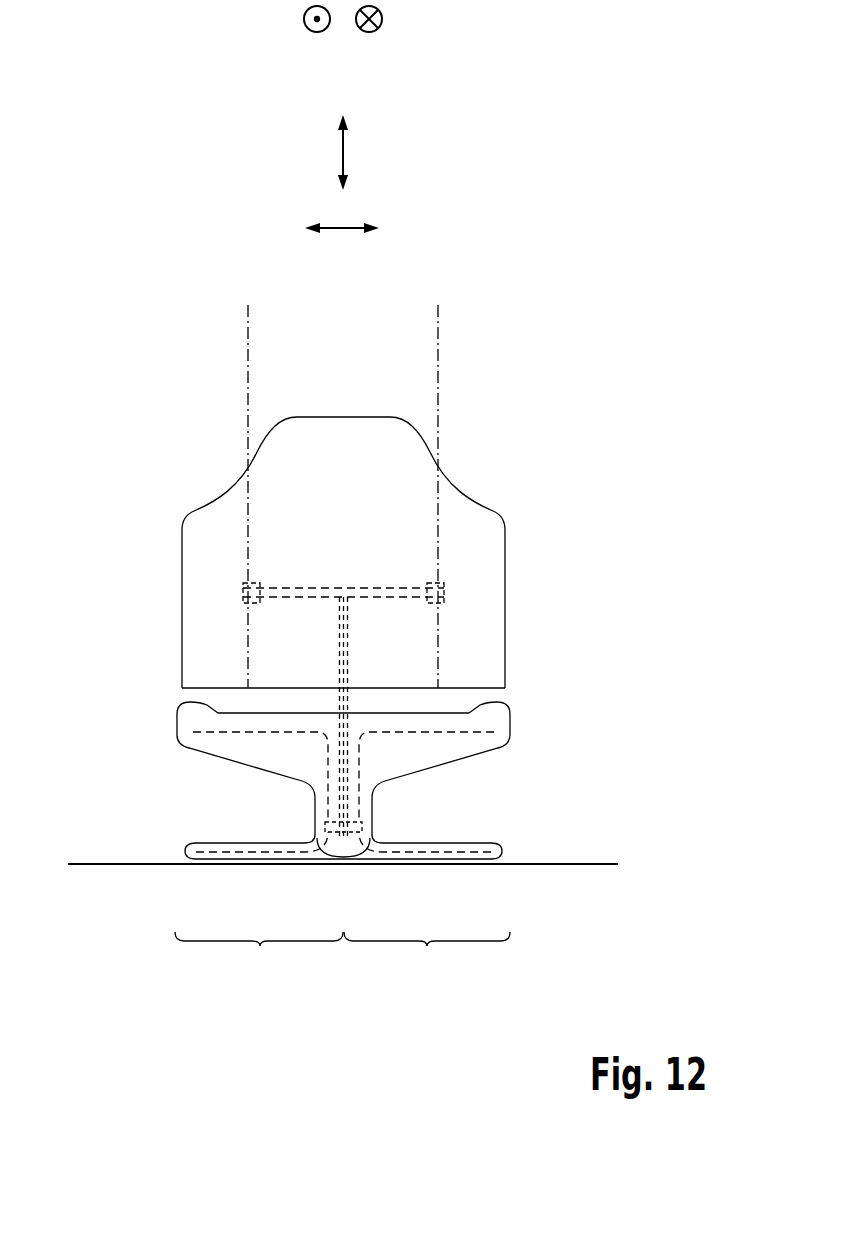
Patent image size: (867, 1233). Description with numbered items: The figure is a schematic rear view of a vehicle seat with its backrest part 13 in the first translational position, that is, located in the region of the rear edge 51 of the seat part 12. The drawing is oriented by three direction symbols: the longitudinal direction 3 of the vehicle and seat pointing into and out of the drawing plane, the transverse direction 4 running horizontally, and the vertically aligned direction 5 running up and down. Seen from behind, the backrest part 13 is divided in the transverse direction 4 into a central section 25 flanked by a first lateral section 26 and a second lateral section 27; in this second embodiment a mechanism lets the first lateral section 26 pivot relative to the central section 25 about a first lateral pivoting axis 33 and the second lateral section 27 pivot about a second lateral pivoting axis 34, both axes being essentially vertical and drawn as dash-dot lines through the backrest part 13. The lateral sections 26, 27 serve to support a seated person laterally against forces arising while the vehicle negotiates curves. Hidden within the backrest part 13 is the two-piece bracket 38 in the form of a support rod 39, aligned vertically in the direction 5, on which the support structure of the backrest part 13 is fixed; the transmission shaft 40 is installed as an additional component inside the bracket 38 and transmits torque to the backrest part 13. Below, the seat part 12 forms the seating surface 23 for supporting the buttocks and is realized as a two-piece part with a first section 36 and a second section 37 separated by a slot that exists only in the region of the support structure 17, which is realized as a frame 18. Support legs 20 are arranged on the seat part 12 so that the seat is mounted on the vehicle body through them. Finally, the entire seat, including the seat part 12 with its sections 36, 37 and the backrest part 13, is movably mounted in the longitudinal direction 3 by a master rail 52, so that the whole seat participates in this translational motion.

The longitudinal direction 3 is at (317, 33).
The transverse direction 4 is at (340, 229).
The vertically aligned direction 5 is at (344, 152).
The seat part 12 is at (372, 810).
The backrest part 13 is at (373, 519).
The support structure 17 is at (344, 819).
The frame 18 is at (344, 819).
The support legs 20 is at (315, 806).
The seating surface 23 is at (232, 711).
The central section 25 is at (342, 447).
The first lateral section 26 is at (475, 545).
The second lateral section 27 is at (213, 543).
The first lateral pivoting axis 33 is at (247, 318).
The second lateral pivoting axis 34 is at (439, 318).
The first section 36 is at (229, 842).
The second section 37 is at (427, 842).
The bracket 38 is at (441, 680).
The support rod 39 is at (441, 680).
The transmission shaft 40 is at (318, 590).
The rear edge 51 is at (200, 720).
The master rail 52 is at (245, 866).